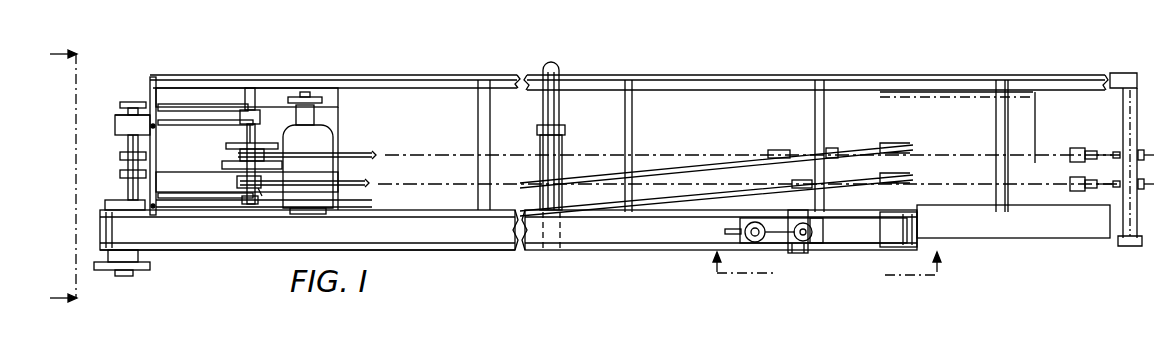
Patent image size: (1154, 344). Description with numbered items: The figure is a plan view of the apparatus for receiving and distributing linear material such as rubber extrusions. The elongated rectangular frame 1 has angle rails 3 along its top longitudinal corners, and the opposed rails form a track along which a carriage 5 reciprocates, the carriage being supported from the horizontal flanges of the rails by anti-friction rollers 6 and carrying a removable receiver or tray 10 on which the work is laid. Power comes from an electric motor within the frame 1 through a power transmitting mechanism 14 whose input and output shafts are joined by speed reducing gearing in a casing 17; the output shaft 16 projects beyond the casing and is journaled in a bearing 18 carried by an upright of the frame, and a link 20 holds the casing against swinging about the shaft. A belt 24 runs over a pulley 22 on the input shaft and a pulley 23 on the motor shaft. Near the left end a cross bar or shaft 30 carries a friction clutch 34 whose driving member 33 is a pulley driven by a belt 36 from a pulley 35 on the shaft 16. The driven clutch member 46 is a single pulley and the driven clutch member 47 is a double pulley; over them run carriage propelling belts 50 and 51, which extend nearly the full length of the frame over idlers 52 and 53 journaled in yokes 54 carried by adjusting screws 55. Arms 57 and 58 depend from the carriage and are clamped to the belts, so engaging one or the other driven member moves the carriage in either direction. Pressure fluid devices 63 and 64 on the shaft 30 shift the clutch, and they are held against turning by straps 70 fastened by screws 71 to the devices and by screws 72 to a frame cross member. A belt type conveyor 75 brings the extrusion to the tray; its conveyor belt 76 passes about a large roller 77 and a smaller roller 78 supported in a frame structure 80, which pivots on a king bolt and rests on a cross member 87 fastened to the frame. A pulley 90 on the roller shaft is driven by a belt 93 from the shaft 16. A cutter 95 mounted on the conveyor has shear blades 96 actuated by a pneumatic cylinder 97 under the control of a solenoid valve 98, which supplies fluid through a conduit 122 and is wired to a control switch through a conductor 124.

The frame 1 is at (460, 70).
The angle rails 3 is at (1130, 246).
The carriage 5 is at (782, 92).
The rollers 6 is at (825, 277).
The receiver or tray 10 is at (1036, 118).
The power transmitting mechanism 14 is at (110, 129).
The shaft 16 is at (128, 146).
The casing 17 is at (117, 117).
The bearing 18 is at (124, 156).
The link 20 is at (258, 125).
The pulley 22 is at (135, 102).
The pulley 23 is at (324, 100).
The belt 24 is at (185, 105).
The cross bar or shaft 30 is at (250, 100).
The driving member 33 is at (274, 169).
The clutch 34 is at (220, 156).
The pulley 35 is at (120, 175).
The belt 36 is at (196, 176).
The driven clutch member 46 is at (262, 200).
The driven clutch member 47 is at (270, 130).
The belt 50 is at (366, 182).
The belt 51 is at (372, 153).
The idler 52 is at (840, 152).
The idler 53 is at (1070, 148).
The yokes 54 is at (1088, 160).
The screws 55 is at (1116, 151).
The arm 57 is at (833, 148).
The arm 58 is at (832, 190).
The pressure fluid device 63 is at (240, 182).
The pressure fluid device 64 is at (240, 132).
The straps 70 is at (182, 128).
The screws 71 is at (244, 107).
The screws 72 is at (152, 124).
The belt type conveyor 75 is at (592, 252).
The conveyor belt 76 is at (486, 240).
The roller 77 is at (100, 212).
The roller 78 is at (918, 216).
The frame structure 80 is at (200, 250).
The cross member 87 is at (565, 135).
The pulley 90 is at (132, 272).
The belt 93 is at (140, 259).
The cutter 95 is at (814, 250).
The shear blades 96 is at (826, 232).
The cylinder 97 is at (806, 254).
The solenoid valve 98 is at (755, 243).
The conduit 122 is at (795, 216).
The conductor 124 is at (724, 232).